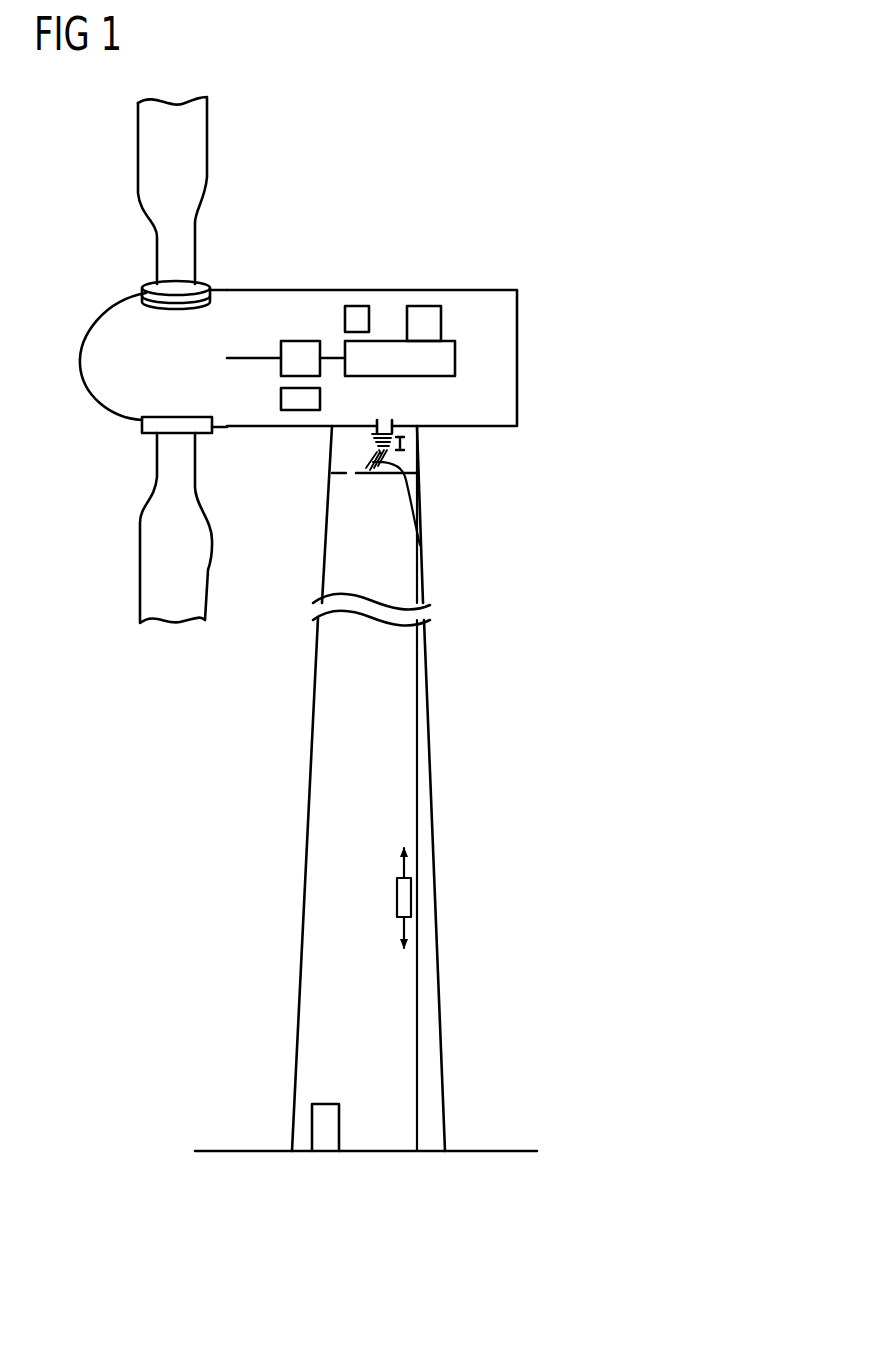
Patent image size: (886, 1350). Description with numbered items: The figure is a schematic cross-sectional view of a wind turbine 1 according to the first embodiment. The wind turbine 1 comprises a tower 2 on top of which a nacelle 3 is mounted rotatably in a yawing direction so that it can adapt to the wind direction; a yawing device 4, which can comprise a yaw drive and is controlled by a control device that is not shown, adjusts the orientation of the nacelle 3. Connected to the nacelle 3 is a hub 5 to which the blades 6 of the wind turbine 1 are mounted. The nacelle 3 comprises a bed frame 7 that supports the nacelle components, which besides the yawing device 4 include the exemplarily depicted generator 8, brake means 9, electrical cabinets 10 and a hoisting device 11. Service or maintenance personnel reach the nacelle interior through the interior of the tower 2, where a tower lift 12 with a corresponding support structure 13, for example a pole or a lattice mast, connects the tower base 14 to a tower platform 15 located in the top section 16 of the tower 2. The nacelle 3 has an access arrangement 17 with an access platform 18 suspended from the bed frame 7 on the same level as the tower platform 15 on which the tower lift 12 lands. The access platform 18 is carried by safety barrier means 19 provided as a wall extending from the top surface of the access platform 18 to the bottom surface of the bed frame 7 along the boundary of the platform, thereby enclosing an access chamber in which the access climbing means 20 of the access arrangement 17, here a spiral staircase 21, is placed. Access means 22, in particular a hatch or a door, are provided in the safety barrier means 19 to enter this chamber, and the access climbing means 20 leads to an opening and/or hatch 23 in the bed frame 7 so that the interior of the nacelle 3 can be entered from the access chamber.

The wind turbine 1 is at (447, 198).
The tower 2 is at (298, 1017).
The nacelle 3 is at (485, 290).
The yawing device 4 is at (281, 398).
The hub 5 is at (93, 360).
The blades 6 is at (153, 150).
The bed frame 7 is at (493, 428).
The generator 8 is at (455, 358).
The brake means 9 is at (300, 341).
The electrical cabinets 10 is at (425, 306).
The hoisting device 11 is at (357, 306).
The tower lift 12 is at (383, 902).
The support structure 13 is at (417, 990).
The tower base 14 is at (478, 1136).
The tower platform 15 is at (346, 473).
The top section 16 is at (425, 471).
The access arrangement 17 is at (366, 485).
The access platform 18 is at (383, 478).
The safety barrier means 19 is at (360, 448).
The access climbing means 20 is at (362, 440).
The spiral staircase 21 is at (420, 545).
The access means 22 is at (404, 443).
The opening and/or hatch 23 is at (386, 418).